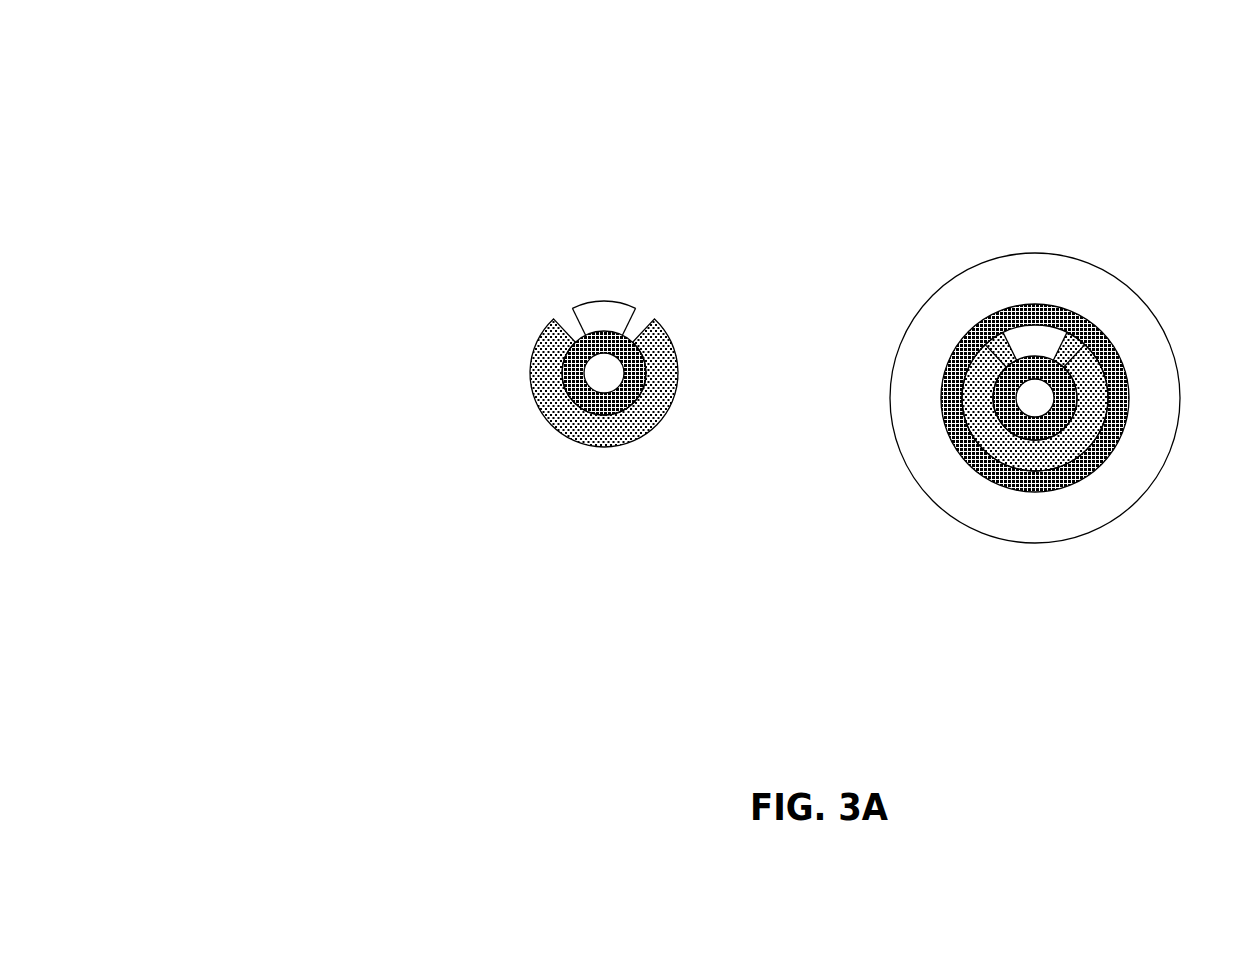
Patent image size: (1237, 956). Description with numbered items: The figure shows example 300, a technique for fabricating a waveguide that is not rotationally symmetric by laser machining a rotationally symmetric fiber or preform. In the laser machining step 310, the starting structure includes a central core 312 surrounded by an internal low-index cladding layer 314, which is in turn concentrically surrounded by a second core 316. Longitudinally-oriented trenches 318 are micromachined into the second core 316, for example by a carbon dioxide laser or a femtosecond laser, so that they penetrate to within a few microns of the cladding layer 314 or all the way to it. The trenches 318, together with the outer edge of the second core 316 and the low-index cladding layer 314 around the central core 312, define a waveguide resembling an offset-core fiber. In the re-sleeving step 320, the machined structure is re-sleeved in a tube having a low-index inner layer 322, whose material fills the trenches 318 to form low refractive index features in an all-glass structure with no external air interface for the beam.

The example 300 is at (335, 80).
The laser machining 310 is at (532, 304).
The central core 312 is at (603, 375).
The internal low-index cladding layer 314 is at (583, 395).
The second core 316 is at (550, 388).
The longitudinally-oriented trenches 318 is at (566, 311).
The re-sleeving 320 is at (1035, 396).
The low-index inner layer 322 is at (1037, 472).